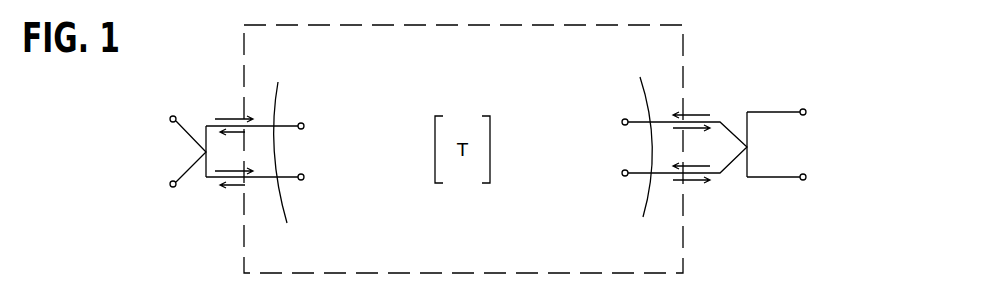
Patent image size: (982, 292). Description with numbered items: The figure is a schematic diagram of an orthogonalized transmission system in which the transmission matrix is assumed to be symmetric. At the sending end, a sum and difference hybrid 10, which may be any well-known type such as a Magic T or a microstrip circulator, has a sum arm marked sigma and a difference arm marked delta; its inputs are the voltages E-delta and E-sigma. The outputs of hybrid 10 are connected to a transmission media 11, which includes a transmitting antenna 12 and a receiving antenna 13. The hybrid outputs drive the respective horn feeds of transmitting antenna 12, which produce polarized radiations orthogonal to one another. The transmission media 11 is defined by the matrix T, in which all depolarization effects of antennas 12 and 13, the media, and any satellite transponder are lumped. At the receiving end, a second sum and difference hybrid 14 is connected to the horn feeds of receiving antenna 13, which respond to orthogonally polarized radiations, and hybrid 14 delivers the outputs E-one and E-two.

The sum and difference hybrid 10 is at (201, 194).
The transmission media 11 is at (283, 25).
The transmitting antenna 12 is at (279, 85).
The receiving antenna 13 is at (642, 80).
The sum and difference hybrid 14 is at (735, 91).